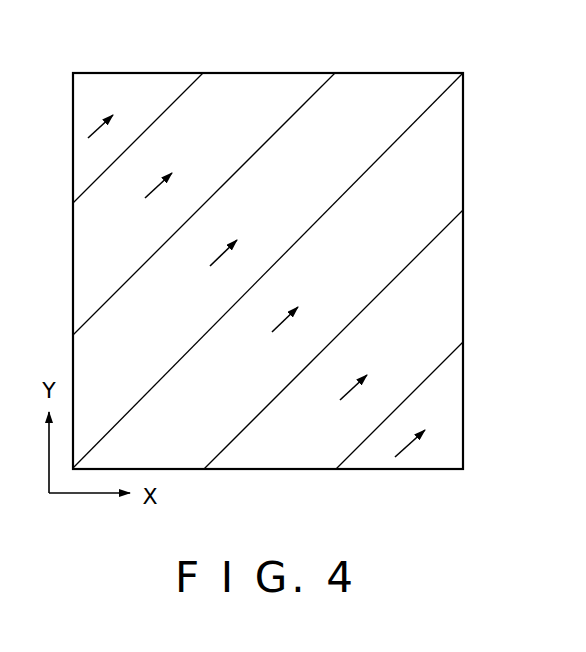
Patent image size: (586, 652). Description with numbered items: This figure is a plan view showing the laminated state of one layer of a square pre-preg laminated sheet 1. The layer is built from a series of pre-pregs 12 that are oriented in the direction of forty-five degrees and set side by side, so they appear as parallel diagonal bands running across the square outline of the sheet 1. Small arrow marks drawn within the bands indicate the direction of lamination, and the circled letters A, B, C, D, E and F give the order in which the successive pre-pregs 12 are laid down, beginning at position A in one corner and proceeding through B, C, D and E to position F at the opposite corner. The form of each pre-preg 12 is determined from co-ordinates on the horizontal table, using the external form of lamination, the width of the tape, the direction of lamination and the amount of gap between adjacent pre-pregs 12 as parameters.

The pre-preg laminated sheet 1 is at (388, 73).
The pre-preg 12 is at (447, 333).
The lamination order position A is at (425, 427).
The lamination order position B is at (371, 369).
The lamination order position C is at (304, 301).
The lamination order position D is at (241, 235).
The lamination order position E is at (175, 168).
The lamination order position F is at (116, 109).